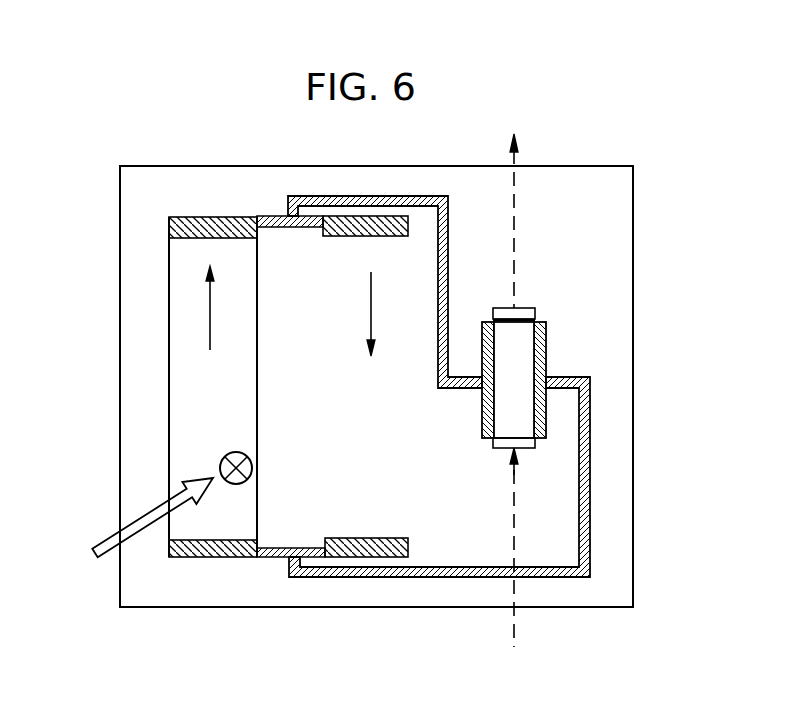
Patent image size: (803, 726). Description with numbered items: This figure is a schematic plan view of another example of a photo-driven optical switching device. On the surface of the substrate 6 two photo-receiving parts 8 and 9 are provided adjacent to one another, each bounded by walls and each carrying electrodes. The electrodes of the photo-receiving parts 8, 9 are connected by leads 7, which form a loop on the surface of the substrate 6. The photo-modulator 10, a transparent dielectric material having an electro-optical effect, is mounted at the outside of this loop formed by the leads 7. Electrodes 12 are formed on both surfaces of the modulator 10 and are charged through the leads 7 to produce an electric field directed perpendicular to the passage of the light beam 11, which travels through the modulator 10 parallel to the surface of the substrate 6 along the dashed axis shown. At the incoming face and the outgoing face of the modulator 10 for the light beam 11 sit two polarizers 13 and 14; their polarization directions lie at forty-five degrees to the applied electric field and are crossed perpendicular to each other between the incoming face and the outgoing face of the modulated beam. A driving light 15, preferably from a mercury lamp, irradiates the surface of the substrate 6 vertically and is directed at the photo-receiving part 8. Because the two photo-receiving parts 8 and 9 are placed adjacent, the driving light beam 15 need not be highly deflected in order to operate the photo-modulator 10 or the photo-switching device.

The substrate 6 is at (598, 618).
The leads 7 is at (449, 258).
The photo-receiving part 8 is at (213, 387).
The photo-receiving part 9 is at (332, 386).
The photo-modulator 10 is at (517, 346).
The light beam 11 is at (516, 377).
The electrodes 12 is at (548, 351).
The polarizer 13 is at (499, 451).
The polarizer 14 is at (519, 308).
The driving light 15 is at (111, 537).